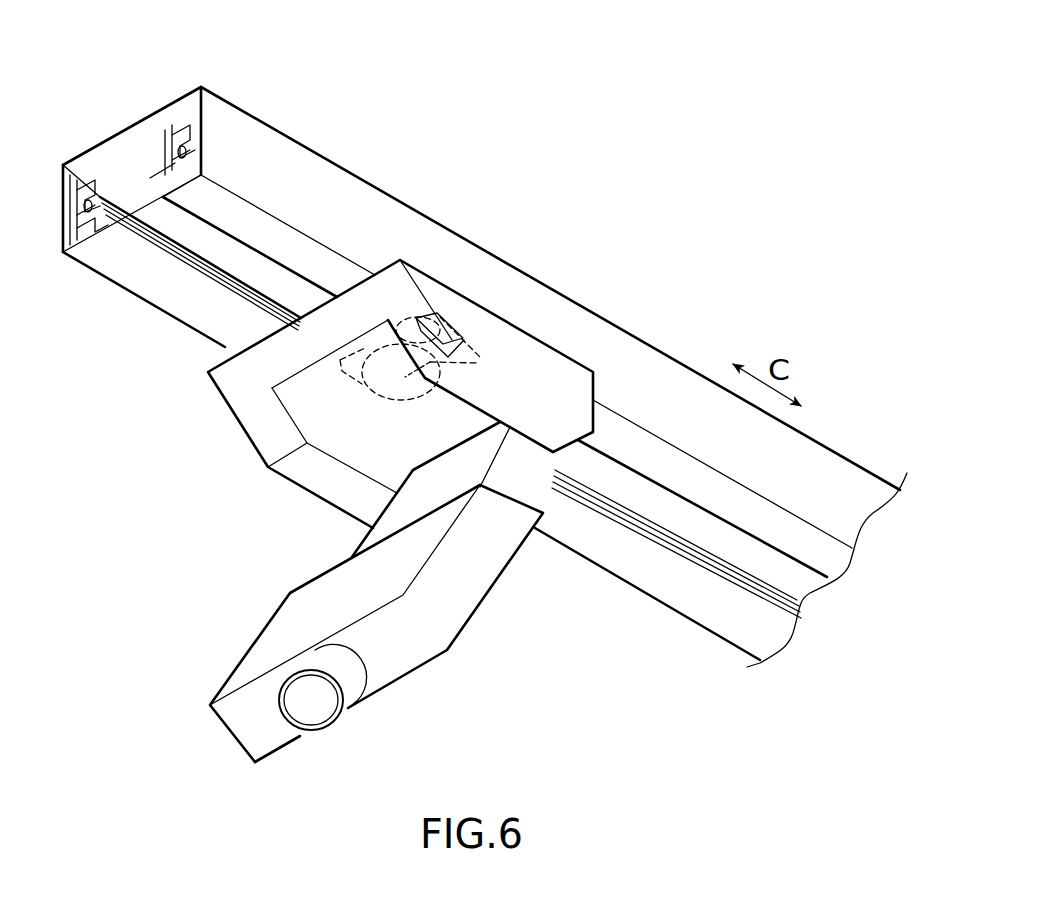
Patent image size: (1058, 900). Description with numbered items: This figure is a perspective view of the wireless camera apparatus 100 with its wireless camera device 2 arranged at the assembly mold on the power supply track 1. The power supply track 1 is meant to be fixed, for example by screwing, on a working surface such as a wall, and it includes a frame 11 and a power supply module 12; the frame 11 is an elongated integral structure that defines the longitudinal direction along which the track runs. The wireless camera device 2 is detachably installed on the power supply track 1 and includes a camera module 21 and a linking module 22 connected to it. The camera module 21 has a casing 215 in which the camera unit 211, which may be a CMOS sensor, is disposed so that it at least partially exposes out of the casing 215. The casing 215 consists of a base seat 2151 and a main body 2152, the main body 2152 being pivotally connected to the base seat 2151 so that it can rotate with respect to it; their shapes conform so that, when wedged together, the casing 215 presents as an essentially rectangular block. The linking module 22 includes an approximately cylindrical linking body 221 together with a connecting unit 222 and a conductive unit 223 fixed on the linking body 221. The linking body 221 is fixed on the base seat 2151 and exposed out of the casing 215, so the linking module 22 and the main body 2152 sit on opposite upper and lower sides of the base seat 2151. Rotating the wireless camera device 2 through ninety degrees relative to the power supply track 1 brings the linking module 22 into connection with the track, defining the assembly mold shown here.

The wireless camera apparatus 100 is at (800, 73).
The power supply track 1 is at (343, 160).
The frame 11 is at (118, 266).
The power supply module 12 is at (163, 168).
The wireless camera device 2 is at (502, 609).
The camera module 21 is at (133, 645).
The camera unit 211 is at (307, 698).
The casing 215 is at (172, 484).
The base seat 2151 is at (318, 478).
The main body 2152 is at (357, 533).
The linking module 22 is at (656, 259).
The linking body 221 is at (407, 377).
The connecting unit 222 is at (446, 344).
The conductive unit 223 is at (431, 310).